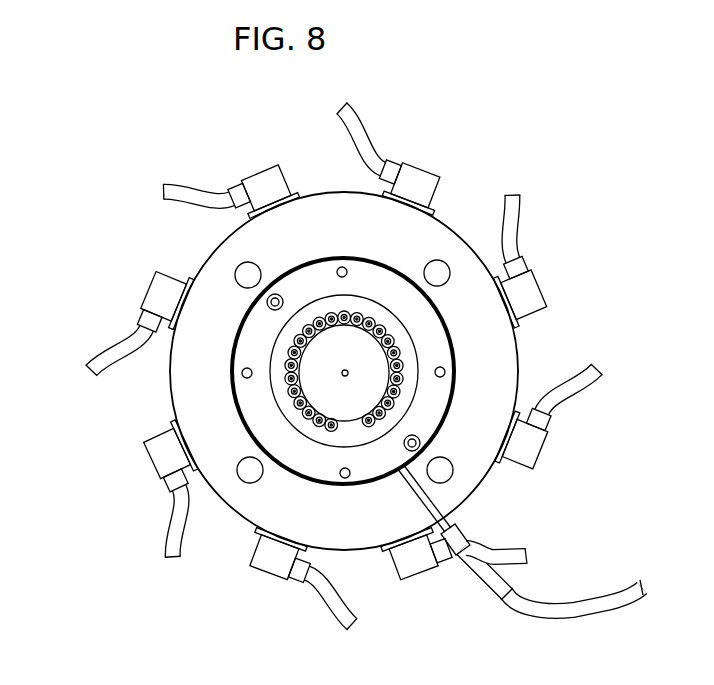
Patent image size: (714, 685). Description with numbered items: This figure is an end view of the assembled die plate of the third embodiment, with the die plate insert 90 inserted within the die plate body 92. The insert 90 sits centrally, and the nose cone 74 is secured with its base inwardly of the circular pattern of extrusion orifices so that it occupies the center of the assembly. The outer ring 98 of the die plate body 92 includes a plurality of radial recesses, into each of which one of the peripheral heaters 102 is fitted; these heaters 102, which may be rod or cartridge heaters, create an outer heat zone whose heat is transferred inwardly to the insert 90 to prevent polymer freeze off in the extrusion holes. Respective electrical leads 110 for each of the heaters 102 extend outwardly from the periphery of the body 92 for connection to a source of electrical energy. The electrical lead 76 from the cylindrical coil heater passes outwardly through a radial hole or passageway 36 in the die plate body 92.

The radial hole or passageway 36 is at (445, 518).
The nose cone 74 is at (345, 355).
The electrical lead 76 is at (554, 603).
The die plate insert 90 is at (392, 287).
The die plate body 92 is at (503, 352).
The outer ring 98 is at (323, 233).
The peripheral heater 102 is at (418, 178).
The electrical lead 110 is at (365, 147).